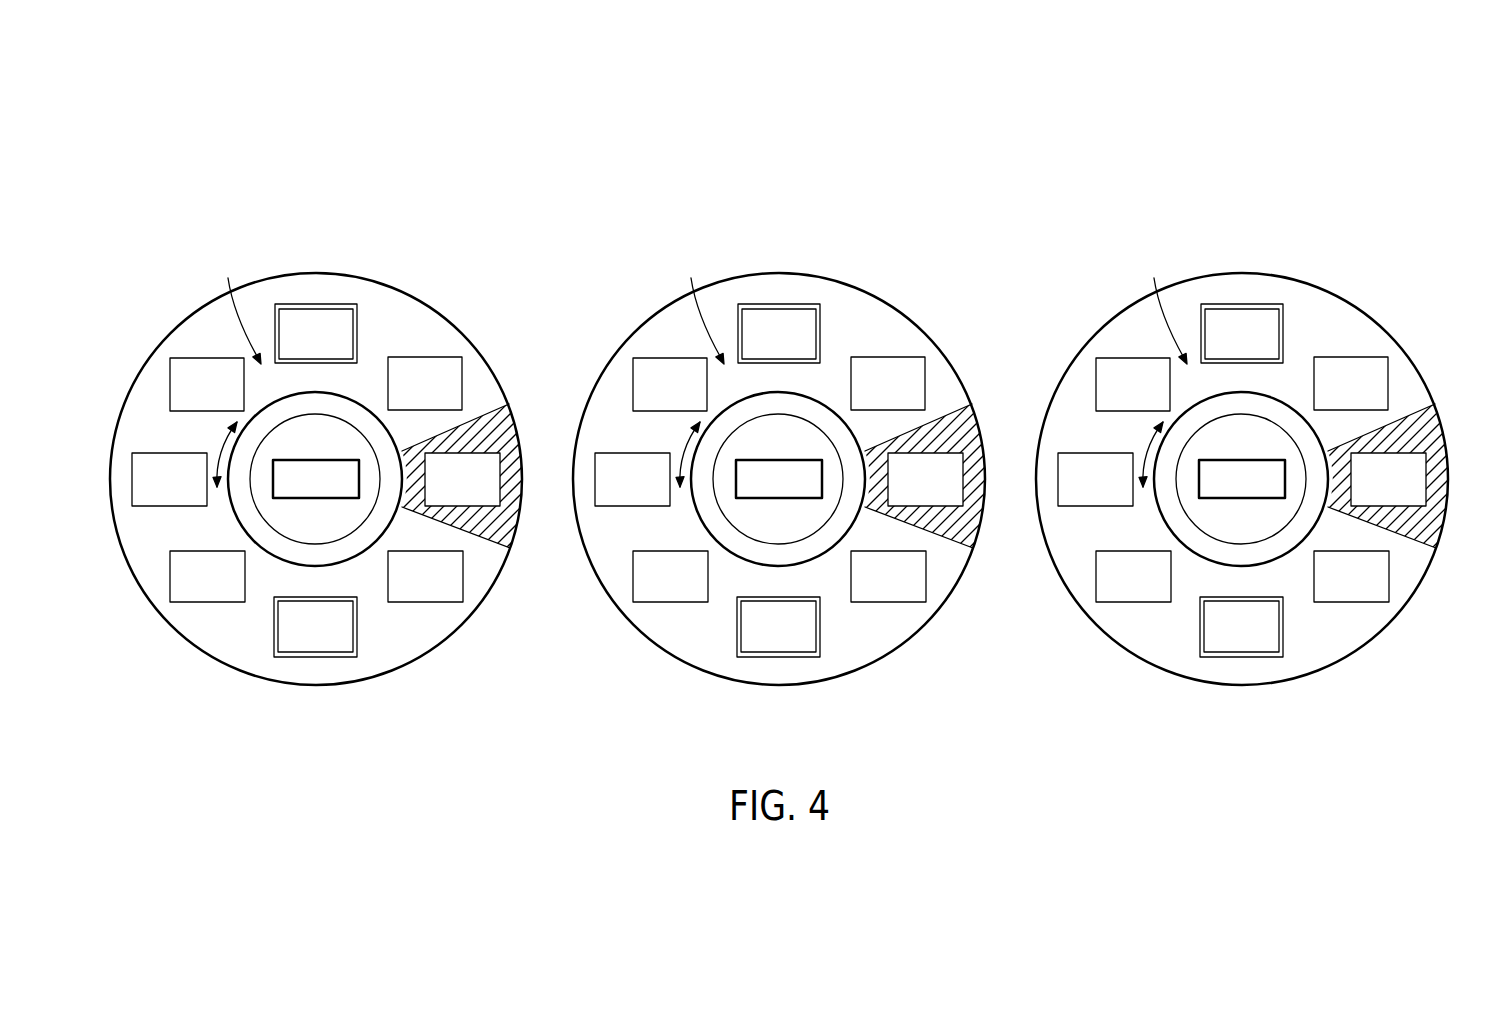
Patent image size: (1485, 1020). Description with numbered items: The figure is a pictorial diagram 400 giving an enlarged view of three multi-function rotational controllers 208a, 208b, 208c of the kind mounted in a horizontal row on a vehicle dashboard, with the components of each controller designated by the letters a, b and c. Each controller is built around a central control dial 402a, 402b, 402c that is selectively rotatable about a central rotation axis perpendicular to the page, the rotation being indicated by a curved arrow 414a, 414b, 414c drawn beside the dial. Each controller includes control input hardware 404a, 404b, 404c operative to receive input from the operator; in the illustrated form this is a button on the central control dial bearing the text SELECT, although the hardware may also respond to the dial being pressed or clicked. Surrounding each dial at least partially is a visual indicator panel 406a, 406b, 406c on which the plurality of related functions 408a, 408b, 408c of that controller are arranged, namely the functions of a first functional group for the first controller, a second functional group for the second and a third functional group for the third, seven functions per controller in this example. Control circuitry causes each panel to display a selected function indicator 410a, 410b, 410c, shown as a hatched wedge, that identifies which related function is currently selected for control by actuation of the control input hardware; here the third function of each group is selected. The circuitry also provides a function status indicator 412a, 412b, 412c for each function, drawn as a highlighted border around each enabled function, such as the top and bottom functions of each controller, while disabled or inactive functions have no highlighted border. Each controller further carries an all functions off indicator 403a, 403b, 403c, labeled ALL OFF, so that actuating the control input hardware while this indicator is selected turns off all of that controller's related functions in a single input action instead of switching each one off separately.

The pictorial diagram 400 is at (1297, 104).
The multi-function rotational controller 208a is at (421, 258).
The multi-function rotational controller 208b is at (851, 458).
The multi-function rotational controller 208c is at (1255, 458).
The central control dial 402a is at (335, 460).
The central control dial 402b is at (799, 372).
The central control dial 402c is at (1262, 372).
The all functions off indicator 403a is at (210, 357).
The all functions off indicator 403b is at (660, 347).
The all functions off indicator 403c is at (1123, 347).
The control input hardware 404a is at (381, 420).
The control input hardware 404b is at (851, 461).
The control input hardware 404c is at (1313, 461).
The visual indicator panel 406a is at (234, 310).
The visual indicator panel 406b is at (697, 310).
The visual indicator panel 406c is at (1160, 310).
The related functions 408a is at (433, 357).
The related functions 408b is at (904, 353).
The related functions 408c is at (1367, 353).
The selected function indicator 410a is at (498, 533).
The selected function indicator 410b is at (938, 509).
The selected function indicator 410c is at (1342, 509).
The function status indicator 412a is at (317, 303).
The function status indicator 412b is at (827, 471).
The function status indicator 412c is at (1290, 471).
The arrow 414a is at (223, 443).
The arrow 414b is at (631, 413).
The arrow 414c is at (1094, 413).